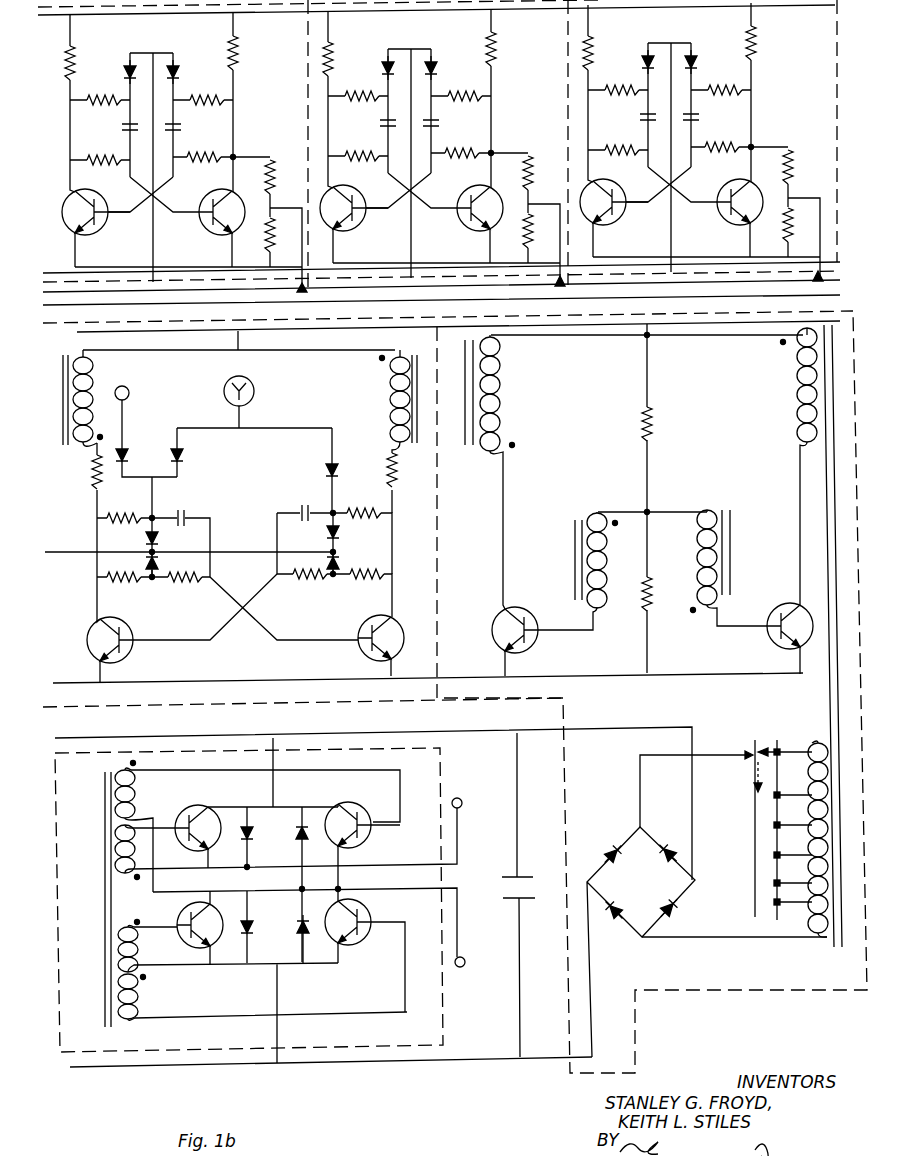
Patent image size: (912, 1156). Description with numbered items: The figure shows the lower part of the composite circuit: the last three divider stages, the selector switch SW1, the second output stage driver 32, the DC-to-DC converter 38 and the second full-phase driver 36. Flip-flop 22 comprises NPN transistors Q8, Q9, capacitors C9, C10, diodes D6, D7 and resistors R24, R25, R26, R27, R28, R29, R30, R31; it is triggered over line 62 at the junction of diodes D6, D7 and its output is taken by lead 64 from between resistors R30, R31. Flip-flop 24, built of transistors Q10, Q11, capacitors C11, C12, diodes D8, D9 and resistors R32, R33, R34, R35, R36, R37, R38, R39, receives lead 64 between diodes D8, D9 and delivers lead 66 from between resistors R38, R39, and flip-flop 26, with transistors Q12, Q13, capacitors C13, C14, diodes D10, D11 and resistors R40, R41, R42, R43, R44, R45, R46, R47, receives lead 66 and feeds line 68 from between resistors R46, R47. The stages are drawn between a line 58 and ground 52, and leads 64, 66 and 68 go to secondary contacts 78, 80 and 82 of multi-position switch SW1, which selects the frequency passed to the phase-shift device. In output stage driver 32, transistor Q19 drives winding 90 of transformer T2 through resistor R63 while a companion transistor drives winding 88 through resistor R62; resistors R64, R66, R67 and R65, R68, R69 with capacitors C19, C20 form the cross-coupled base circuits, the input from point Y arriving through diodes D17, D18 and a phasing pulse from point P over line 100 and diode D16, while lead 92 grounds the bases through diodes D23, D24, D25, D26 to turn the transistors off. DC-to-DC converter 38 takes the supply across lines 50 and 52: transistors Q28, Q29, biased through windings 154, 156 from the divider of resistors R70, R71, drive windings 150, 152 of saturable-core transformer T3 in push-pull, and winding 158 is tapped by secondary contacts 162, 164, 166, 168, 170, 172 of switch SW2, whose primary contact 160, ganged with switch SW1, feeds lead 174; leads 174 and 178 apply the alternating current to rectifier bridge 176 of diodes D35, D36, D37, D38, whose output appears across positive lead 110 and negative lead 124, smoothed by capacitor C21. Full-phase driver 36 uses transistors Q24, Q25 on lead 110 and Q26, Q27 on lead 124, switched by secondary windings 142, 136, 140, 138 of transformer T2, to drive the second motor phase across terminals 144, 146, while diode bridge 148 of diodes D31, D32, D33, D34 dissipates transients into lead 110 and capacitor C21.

The supply line 58 is at (60, 20).
The flip-flop 22 is at (165, 45).
The flip-flop 24 is at (411, 115).
The flip-flop 26 is at (671, 109).
The resistor R24 is at (73, 55).
The resistor R25 is at (115, 99).
The resistor R26 is at (117, 162).
The resistor R27 is at (236, 56).
The resistor R28 is at (220, 98).
The resistor R29 is at (188, 162).
The resistor R30 is at (271, 166).
The resistor R31 is at (266, 247).
The diode D6 is at (126, 71).
The diode D7 is at (176, 71).
The capacitor C9 is at (122, 127).
The capacitor C10 is at (183, 127).
The NPN transistor Q8 is at (93, 237).
The NPN transistor Q9 is at (201, 232).
The ground 52 is at (46, 274).
The line 62 is at (153, 252).
The lead 64 is at (302, 209).
The lead 66 is at (560, 201).
The line 68 is at (822, 226).
The resistor R32 is at (347, 99).
The resistor R33 is at (358, 104).
The resistor R34 is at (358, 167).
The resistor R35 is at (511, 98).
The resistor R36 is at (461, 82).
The resistor R37 is at (479, 165).
The resistor R38 is at (546, 170).
The resistor R39 is at (517, 238).
The diode D8 is at (373, 65).
The diode D9 is at (443, 58).
The capacitor C11 is at (370, 131).
The capacitor C12 is at (454, 118).
The NPN transistor Q10 is at (354, 224).
The NPN transistor Q11 is at (470, 224).
The resistor R40 is at (607, 93).
The resistor R41 is at (618, 80).
The resistor R42 is at (618, 161).
The resistor R43 is at (772, 92).
The resistor R44 is at (741, 76).
The resistor R45 is at (739, 159).
The resistor R46 is at (806, 165).
The resistor R47 is at (755, 232).
The diode D10 is at (630, 59).
The diode D11 is at (712, 57).
The capacitor C13 is at (629, 116).
The capacitor C14 is at (714, 112).
The NPN transistor Q12 is at (614, 218).
The NPN transistor Q13 is at (720, 218).
The secondary contact 78 is at (302, 292).
The secondary contact 80 is at (561, 288).
The secondary contact 82 is at (822, 278).
The multi-position switch SW1 is at (452, 302).
The positive lead 50 is at (76, 338).
The winding 88 is at (92, 380).
The winding 90 is at (388, 364).
The transformer T2 is at (140, 694).
The line 100 is at (123, 418).
The lead 92 is at (72, 547).
The diode D16 is at (124, 452).
The diode D17 is at (180, 456).
The diode D18 is at (329, 466).
The diode D23 is at (146, 540).
The diode D24 is at (146, 570).
The diode D25 is at (338, 528).
The diode D26 is at (338, 564).
The resistor R62 is at (94, 476).
The resistor R63 is at (386, 463).
The resistor R64 is at (140, 513).
The resistor R65 is at (378, 508).
The resistor R66 is at (141, 579).
The resistor R67 is at (204, 579).
The resistor R68 is at (322, 577).
The resistor R69 is at (384, 577).
The capacitor C19 is at (186, 506).
The capacitor C20 is at (296, 508).
The NPN transistor Q19 is at (352, 652).
The DC-to-DC converter 38 is at (508, 702).
The second output stage driver 32 is at (138, 706).
The winding 150 is at (504, 374).
The winding 152 is at (798, 377).
The winding 154 is at (606, 559).
The winding 156 is at (697, 563).
The saturable-core transformer T3 is at (682, 360).
The resistor R70 is at (655, 421).
The resistor R71 is at (650, 620).
The NPN transistor Q28 is at (536, 647).
The NPN transistor Q29 is at (776, 640).
The positive lead 110 is at (598, 727).
The second full-phase driver 36 is at (74, 1068).
The negative lead 124 is at (407, 1066).
The winding 136 is at (132, 799).
The winding 142 is at (113, 861).
The winding 140 is at (137, 956).
The winding 138 is at (138, 1002).
The NPN transistor Q24 is at (190, 809).
The NPN transistor Q25 is at (357, 838).
The NPN transistor Q26 is at (182, 914).
The NPN transistor Q27 is at (329, 957).
The diode D31 is at (250, 831).
The diode D32 is at (300, 842).
The diode D33 is at (251, 922).
The diode D34 is at (299, 936).
The diode bridge 148 is at (305, 912).
The capacitor C21 is at (519, 877).
The terminal 144 is at (460, 801).
The terminal 146 is at (462, 961).
The lead 174 is at (640, 775).
The diode rectifier bridge 176 is at (641, 942).
The diode D35 is at (611, 842).
The diode D36 is at (680, 844).
The diode D37 is at (610, 930).
The diode D38 is at (668, 916).
The lead 178 is at (739, 942).
The switch SW2 is at (754, 738).
The primary contact 160 is at (692, 766).
The secondary contact 162 is at (777, 745).
The secondary contact 164 is at (756, 800).
The secondary contact 166 is at (756, 830).
The secondary contact 168 is at (756, 858).
The secondary contact 170 is at (756, 885).
The secondary contact 172 is at (756, 905).
The winding 158 is at (820, 944).